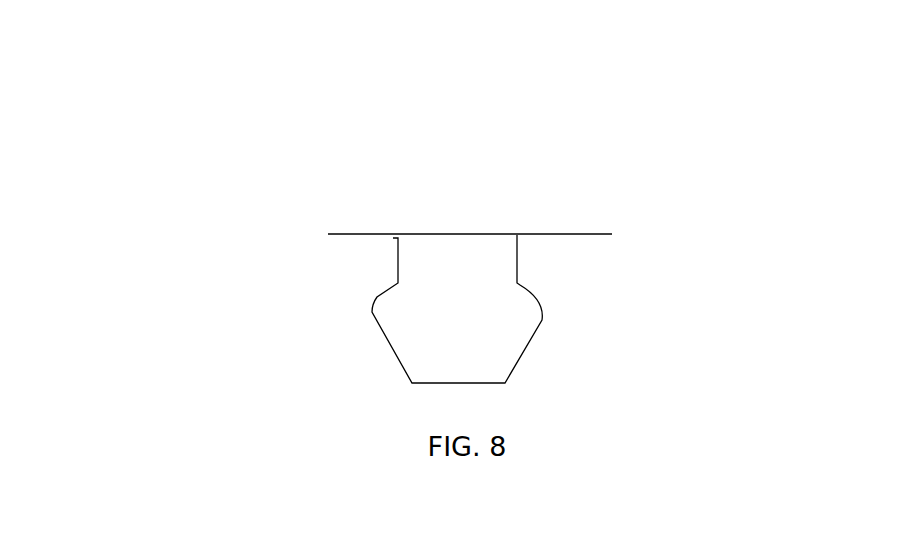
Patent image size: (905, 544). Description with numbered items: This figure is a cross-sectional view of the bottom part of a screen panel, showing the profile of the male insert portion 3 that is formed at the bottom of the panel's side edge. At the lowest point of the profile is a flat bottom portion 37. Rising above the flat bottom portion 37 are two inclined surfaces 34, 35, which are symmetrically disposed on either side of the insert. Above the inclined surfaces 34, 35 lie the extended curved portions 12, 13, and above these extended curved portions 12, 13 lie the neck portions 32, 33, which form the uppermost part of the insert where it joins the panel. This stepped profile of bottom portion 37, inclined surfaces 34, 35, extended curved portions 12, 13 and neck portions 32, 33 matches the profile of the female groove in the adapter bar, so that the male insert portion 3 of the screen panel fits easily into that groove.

The male insert portion 3 is at (272, 200).
The extended curved portion 12 is at (524, 303).
The extended curved portion 13 is at (375, 292).
The neck portion 32 is at (518, 257).
The neck portion 33 is at (390, 270).
The inclined surface 34 is at (388, 352).
The inclined surface 35 is at (537, 342).
The flat bottom portion 37 is at (463, 370).